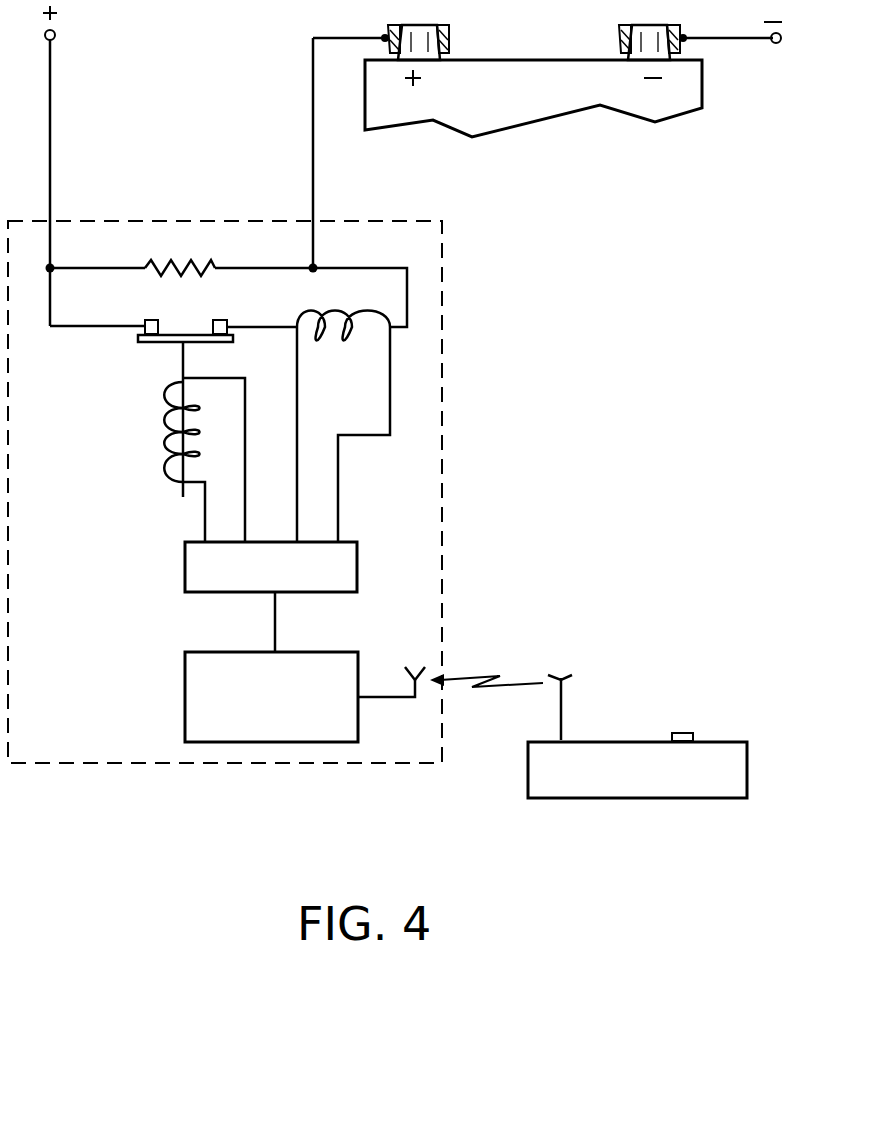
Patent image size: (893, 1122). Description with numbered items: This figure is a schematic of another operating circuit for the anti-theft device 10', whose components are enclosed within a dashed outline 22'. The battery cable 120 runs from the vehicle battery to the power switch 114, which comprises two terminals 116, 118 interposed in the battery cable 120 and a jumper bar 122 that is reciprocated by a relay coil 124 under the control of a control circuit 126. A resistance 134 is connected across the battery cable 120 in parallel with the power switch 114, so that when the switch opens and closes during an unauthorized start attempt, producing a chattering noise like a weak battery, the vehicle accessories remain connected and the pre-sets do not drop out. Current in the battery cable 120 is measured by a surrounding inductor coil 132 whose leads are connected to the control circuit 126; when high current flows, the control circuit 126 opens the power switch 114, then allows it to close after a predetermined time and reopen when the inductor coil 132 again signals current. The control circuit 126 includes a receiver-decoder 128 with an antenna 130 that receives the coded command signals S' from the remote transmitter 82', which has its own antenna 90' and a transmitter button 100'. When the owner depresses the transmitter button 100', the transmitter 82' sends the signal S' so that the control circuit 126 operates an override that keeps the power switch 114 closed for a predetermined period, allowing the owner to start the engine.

The anti-theft device 10' is at (578, 325).
The control unit enclosure 22' is at (282, 492).
The power switch 114 is at (157, 370).
The terminal 116 is at (148, 322).
The terminal 118 is at (222, 322).
The battery cable 120 is at (50, 104).
The jumper bar 122 is at (160, 340).
The relay coil 124 is at (163, 440).
The control circuit 126 is at (374, 557).
The receiver-decoder 128 is at (307, 737).
The antenna 130 is at (417, 670).
The inductor coil 132 is at (377, 312).
The resistance 134 is at (178, 265).
The remote transmitter 82' is at (637, 805).
The transmitter antenna 90' is at (607, 689).
The transmitter button 100' is at (726, 701).
The coded command signal S' is at (486, 723).